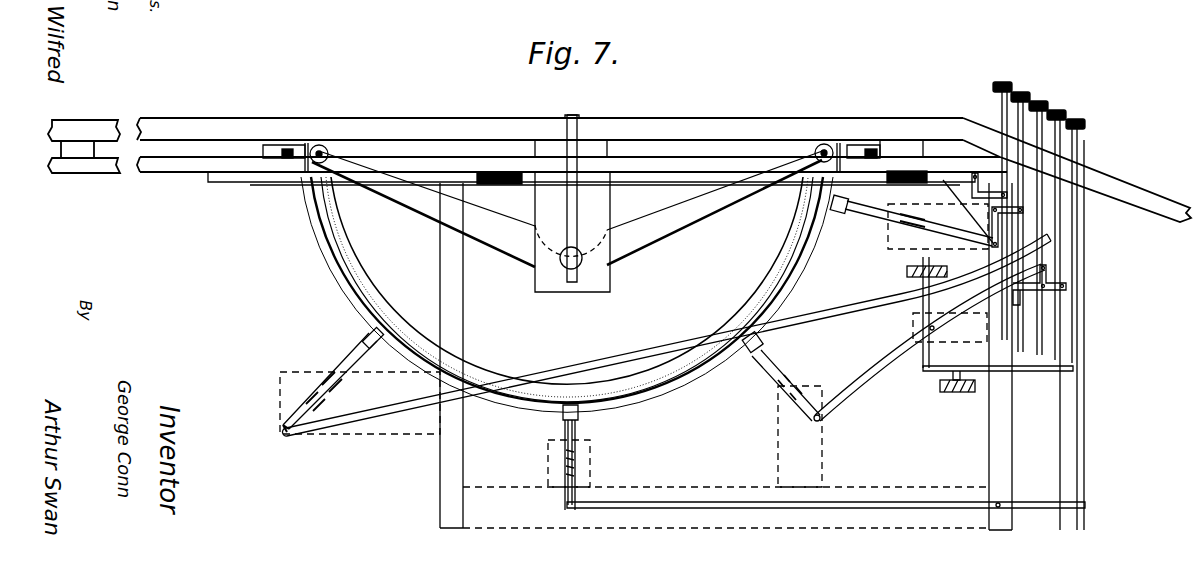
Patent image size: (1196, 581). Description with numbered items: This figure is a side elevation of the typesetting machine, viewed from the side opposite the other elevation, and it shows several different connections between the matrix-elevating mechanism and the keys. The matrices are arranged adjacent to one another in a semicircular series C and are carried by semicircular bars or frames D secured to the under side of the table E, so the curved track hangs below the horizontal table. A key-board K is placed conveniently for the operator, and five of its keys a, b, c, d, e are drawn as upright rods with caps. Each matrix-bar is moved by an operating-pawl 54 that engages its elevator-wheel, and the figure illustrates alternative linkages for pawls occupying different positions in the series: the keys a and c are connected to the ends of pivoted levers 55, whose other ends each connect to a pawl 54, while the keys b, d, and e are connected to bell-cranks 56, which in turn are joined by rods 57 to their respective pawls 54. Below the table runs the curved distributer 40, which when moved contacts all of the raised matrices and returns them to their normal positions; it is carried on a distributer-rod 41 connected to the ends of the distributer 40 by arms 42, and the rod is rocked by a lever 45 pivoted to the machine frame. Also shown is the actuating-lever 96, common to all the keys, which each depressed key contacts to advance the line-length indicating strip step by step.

The distributer 40 is at (357, 268).
The distributer-rod 41 is at (567, 266).
The arms 42 is at (405, 200).
The lever 45 is at (577, 206).
The operating-pawl 54 is at (867, 213).
The pivoted levers 55 is at (884, 360).
The bell-cranks 56 is at (1092, 302).
The rods 57 is at (666, 335).
The actuating-lever 96 is at (1047, 371).
The table E is at (550, 118).
The key-board K is at (1077, 170).
The semicircular bars or frames D is at (334, 281).
The semicircular series C is at (709, 396).
The key a is at (1075, 315).
The key b is at (1056, 310).
The key c is at (1038, 217).
The key d is at (1020, 211).
The key e is at (1002, 201).